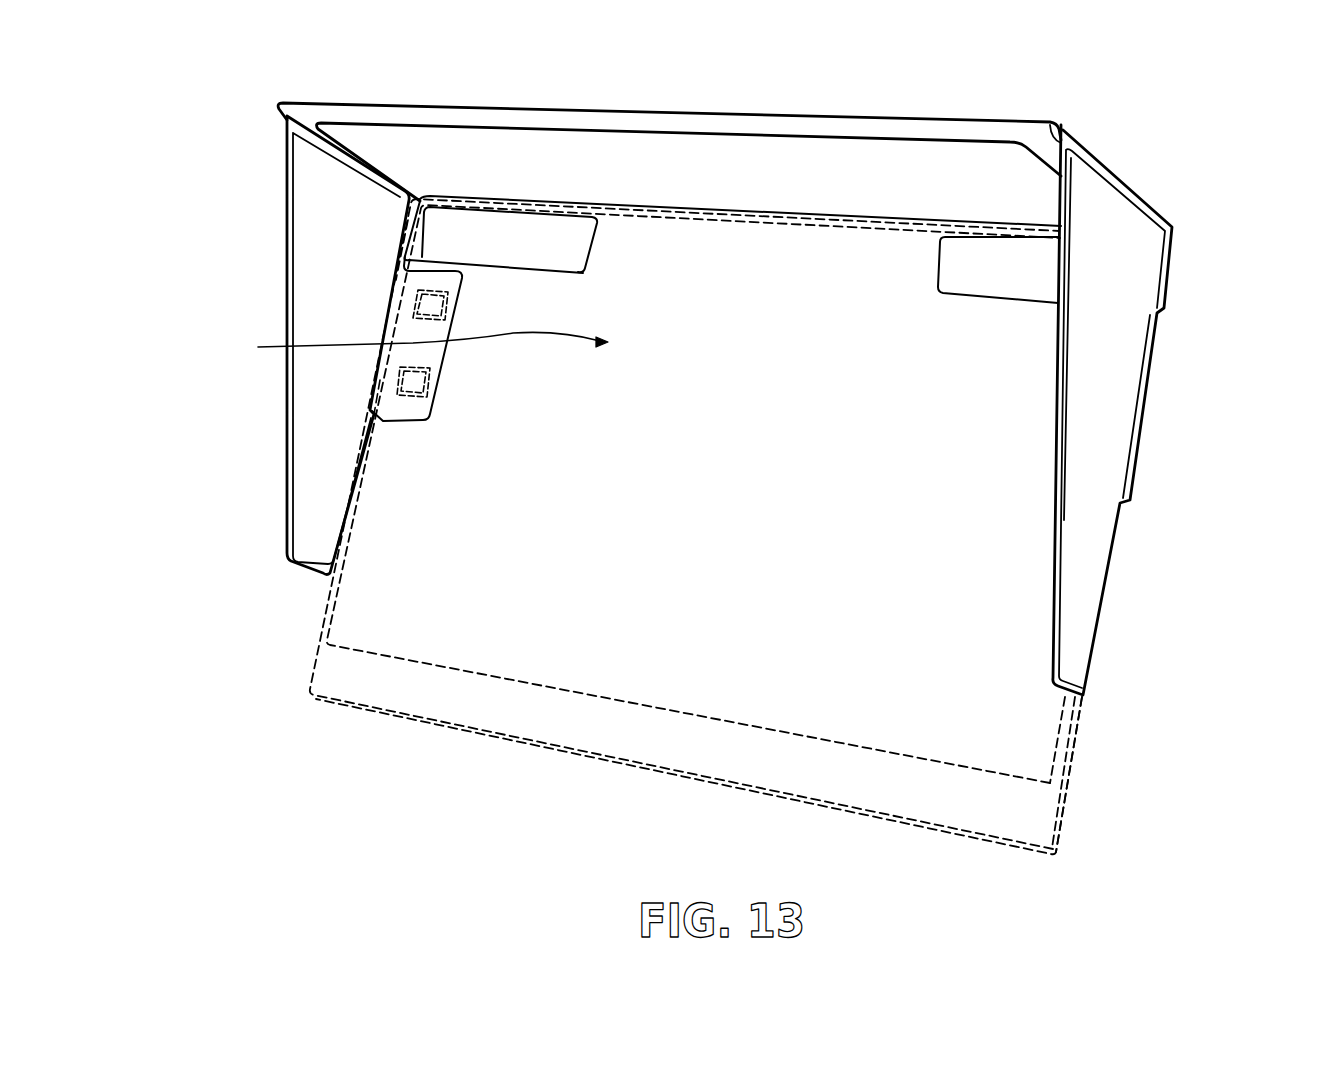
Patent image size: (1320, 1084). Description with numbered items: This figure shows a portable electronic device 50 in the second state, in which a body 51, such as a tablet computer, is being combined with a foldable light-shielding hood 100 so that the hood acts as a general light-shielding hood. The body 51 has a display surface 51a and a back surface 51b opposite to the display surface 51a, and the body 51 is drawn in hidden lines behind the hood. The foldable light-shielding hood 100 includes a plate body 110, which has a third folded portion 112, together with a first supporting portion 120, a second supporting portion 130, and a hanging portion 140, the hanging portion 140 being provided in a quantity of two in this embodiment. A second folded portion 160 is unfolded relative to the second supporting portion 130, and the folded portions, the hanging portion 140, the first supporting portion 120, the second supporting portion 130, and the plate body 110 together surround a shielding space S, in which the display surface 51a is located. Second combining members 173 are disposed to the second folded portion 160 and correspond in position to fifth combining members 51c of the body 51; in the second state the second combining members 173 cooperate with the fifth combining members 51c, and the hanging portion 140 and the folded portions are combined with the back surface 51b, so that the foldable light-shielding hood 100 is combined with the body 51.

The foldable light-shielding hood 100 is at (255, 94).
The plate body 110 is at (706, 149).
The third folded portion 112 is at (952, 175).
The first supporting portion 120 is at (1097, 368).
The second supporting portion 130 is at (315, 423).
The hanging portion 140 is at (437, 236).
The second folded portion 160 is at (403, 356).
The second combining member 173 is at (413, 303).
The shielding space S is at (421, 346).
The portable electronic device 50 is at (1238, 878).
The body 51 is at (828, 708).
The display surface 51a is at (630, 616).
The back surface 51b is at (1078, 748).
The fifth combining member 51c is at (457, 297).